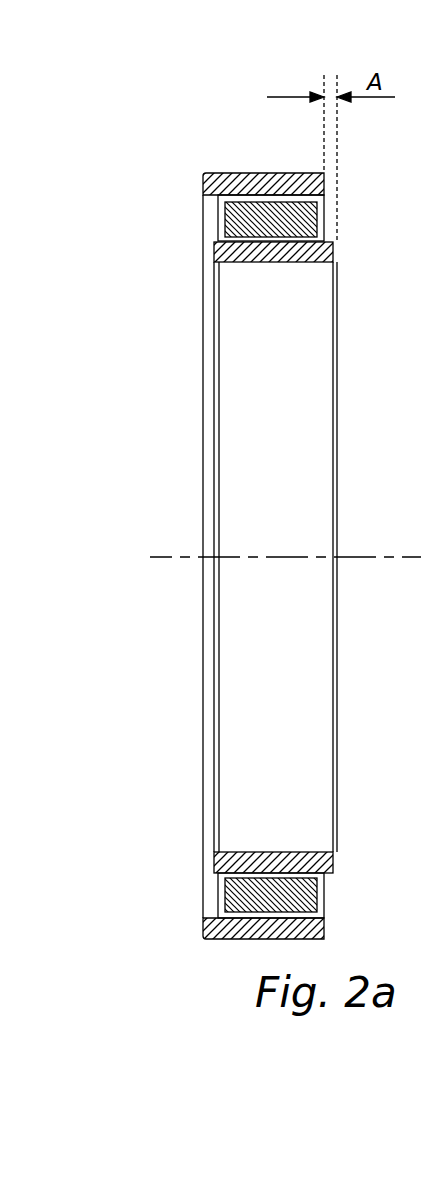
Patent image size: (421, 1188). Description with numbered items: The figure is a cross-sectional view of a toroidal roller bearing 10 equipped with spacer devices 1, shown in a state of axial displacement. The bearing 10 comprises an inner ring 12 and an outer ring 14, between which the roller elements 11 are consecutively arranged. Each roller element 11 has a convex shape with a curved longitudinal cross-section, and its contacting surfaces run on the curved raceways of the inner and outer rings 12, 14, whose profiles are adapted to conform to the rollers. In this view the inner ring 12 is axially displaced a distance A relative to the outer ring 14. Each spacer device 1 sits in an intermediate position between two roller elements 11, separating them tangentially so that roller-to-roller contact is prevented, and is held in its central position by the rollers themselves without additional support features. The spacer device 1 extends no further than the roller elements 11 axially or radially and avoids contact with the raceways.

The toroidal roller bearing 10 is at (101, 108).
The outer ring 14 is at (209, 187).
The roller element 11 is at (218, 210).
The spacer device 1 is at (222, 232).
The inner ring 12 is at (333, 248).